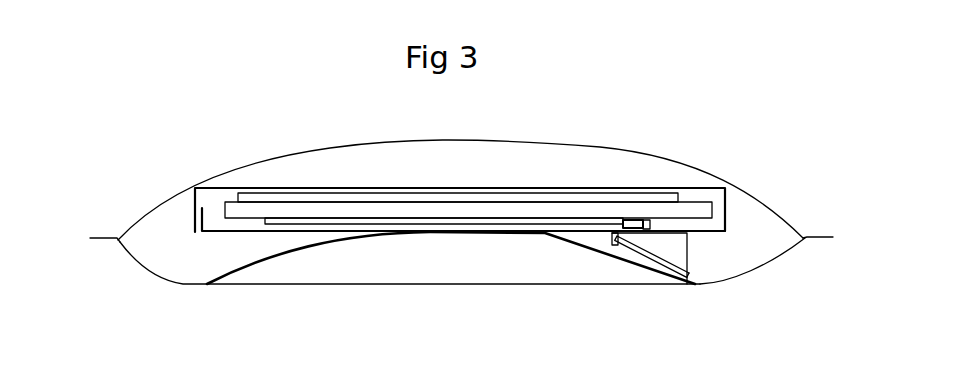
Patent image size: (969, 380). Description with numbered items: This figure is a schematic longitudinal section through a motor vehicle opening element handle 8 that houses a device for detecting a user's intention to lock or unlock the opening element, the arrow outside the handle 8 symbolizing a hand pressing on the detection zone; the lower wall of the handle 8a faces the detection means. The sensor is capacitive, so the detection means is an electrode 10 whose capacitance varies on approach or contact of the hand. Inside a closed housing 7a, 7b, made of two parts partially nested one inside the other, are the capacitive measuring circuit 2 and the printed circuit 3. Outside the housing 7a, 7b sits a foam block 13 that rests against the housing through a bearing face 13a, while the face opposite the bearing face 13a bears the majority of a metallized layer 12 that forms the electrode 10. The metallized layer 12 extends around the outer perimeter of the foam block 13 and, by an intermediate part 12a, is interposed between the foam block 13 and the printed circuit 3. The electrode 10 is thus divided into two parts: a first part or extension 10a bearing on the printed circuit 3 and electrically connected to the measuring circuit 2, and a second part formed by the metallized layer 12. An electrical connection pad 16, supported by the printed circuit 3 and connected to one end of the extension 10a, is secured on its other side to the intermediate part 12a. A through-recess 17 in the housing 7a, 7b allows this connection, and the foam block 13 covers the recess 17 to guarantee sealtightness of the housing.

The opening element handle 8 is at (206, 156).
The lower shell portion 8a is at (663, 250).
The detection means 10 is at (697, 287).
The housing 7b is at (278, 193).
The housing 7a is at (222, 232).
The capacitive measuring circuit 2 is at (363, 198).
The printed circuit 3 is at (457, 210).
The extension of the electrode 10a is at (405, 223).
The electrical connection pad 16 is at (623, 220).
The through-recess 17 is at (648, 220).
The intermediate part 12a is at (614, 246).
The metallized layer 12 is at (688, 285).
The foam block 13 is at (655, 267).
The bearing face 13a is at (681, 240).